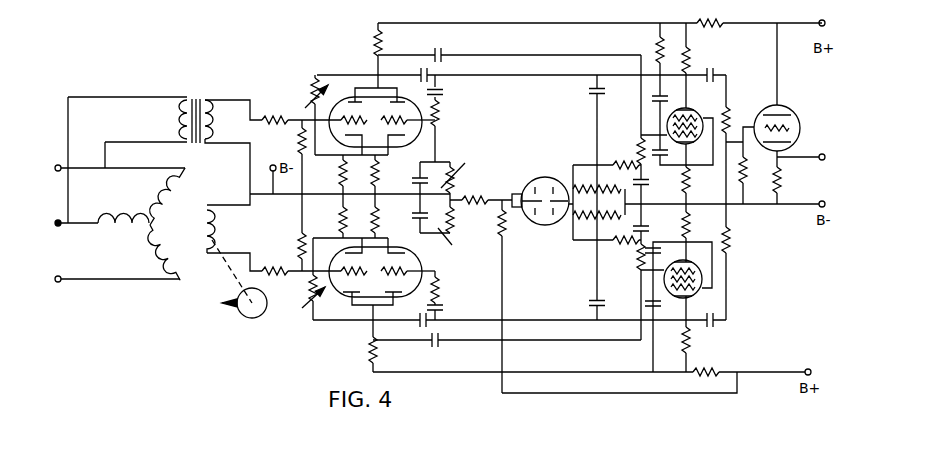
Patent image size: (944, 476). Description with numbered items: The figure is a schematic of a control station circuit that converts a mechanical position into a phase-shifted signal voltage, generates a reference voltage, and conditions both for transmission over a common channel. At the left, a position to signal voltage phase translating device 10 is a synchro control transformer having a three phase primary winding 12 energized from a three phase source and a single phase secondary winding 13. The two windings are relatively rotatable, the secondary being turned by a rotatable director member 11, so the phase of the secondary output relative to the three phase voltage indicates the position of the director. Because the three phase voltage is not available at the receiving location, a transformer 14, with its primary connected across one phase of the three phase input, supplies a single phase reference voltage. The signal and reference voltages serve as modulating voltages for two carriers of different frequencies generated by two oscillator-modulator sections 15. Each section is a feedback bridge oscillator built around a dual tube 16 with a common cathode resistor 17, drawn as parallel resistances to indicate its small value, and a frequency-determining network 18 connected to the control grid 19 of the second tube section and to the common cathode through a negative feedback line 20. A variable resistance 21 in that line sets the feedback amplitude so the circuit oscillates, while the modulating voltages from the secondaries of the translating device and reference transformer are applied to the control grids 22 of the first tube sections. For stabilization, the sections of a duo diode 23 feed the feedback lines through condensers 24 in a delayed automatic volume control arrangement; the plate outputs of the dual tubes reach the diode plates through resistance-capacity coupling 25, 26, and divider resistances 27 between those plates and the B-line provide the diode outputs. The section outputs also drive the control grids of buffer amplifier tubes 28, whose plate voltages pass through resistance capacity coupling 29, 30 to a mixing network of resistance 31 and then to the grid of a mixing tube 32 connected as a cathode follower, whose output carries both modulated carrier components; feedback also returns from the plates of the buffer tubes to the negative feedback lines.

The position to signal voltage phase translating device 10 is at (177, 288).
The rotatable director member 11 is at (258, 316).
The three phase primary winding 12 is at (168, 220).
The single phase secondary winding 13 is at (207, 243).
The transformer 14 is at (199, 93).
The oscillator-modulator section 15 is at (335, 70).
The dual tube 16 is at (413, 142).
The common cathode resistor 17 is at (344, 168).
The frequency-determining network 18 is at (471, 158).
The control grid 19 is at (435, 123).
The negative feedback line 20 is at (390, 68).
The variable resistance 21 is at (307, 317).
The control grid 22 is at (339, 155).
The duo diode 23 is at (554, 178).
The condenser 24 is at (594, 94).
The resistance 25 is at (381, 48).
The capacity 26 is at (439, 54).
The divider resistances 27 is at (597, 202).
The buffer amplifier tube 28 is at (721, 103).
The resistance 29 is at (690, 67).
The capacity 30 is at (719, 80).
The mixing network of resistance 31 is at (730, 115).
The mixing tube 32 is at (785, 115).